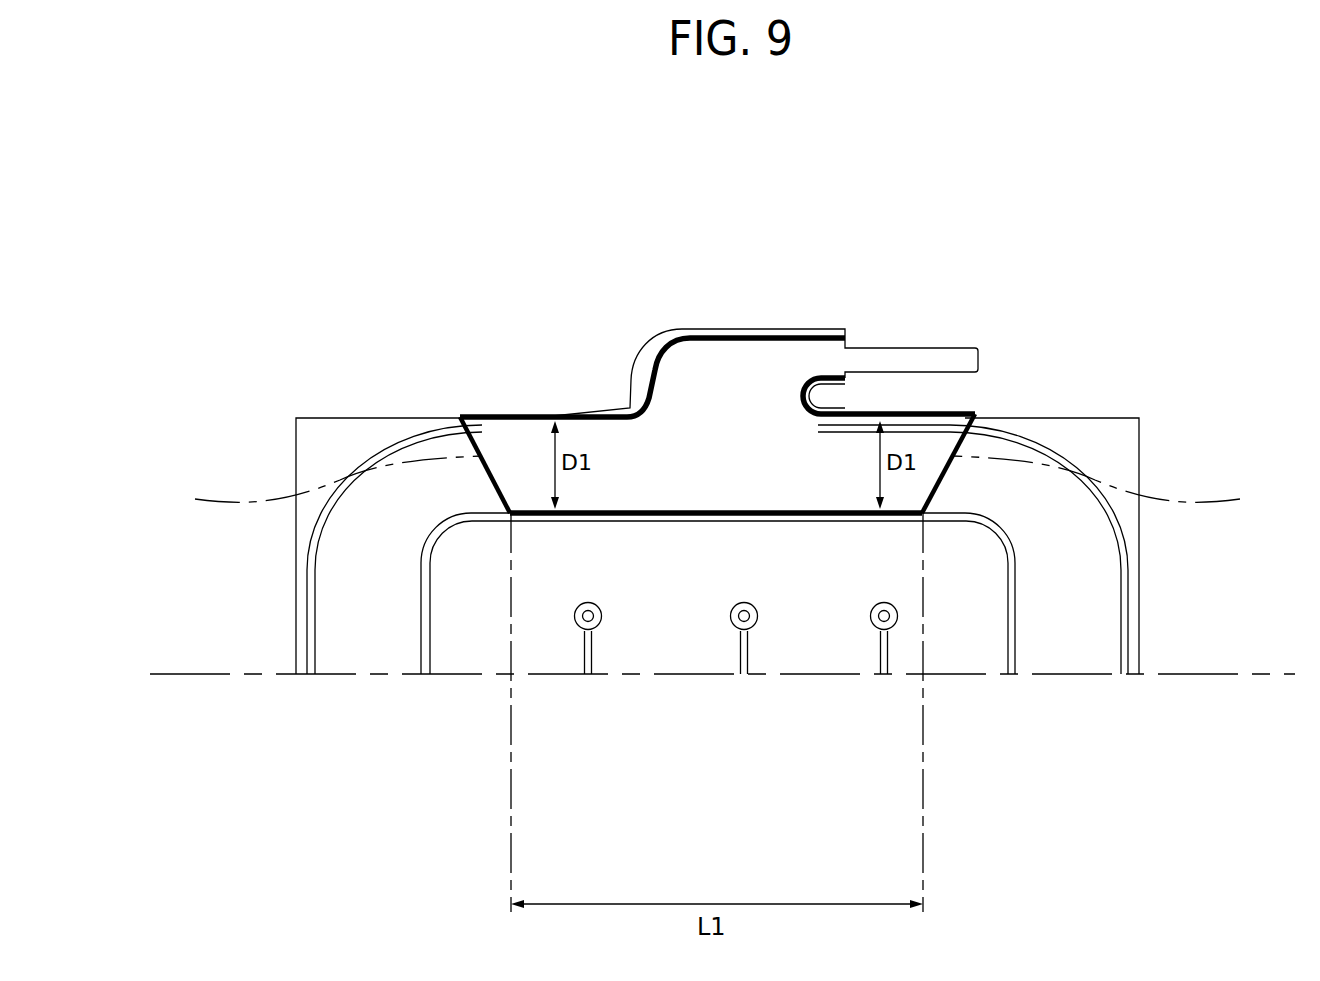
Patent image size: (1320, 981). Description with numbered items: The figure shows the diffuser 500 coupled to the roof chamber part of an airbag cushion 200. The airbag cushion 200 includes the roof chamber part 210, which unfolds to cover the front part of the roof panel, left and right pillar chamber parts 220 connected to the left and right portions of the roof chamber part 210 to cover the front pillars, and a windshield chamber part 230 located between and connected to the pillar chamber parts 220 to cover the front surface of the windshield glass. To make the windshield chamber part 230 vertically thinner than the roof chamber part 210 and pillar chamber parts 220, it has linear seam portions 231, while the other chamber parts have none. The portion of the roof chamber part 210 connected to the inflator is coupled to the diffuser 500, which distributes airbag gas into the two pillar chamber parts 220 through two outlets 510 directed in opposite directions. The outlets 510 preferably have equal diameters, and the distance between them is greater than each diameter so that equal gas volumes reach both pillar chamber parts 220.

The airbag cushion 200 is at (1075, 406).
The roof chamber part 210 is at (745, 457).
The pillar chamber parts 220 is at (336, 624).
The windshield chamber part 230 is at (659, 553).
The seam portion 231 is at (884, 647).
The diffuser 500 is at (638, 375).
The outlets 510 is at (723, 486).